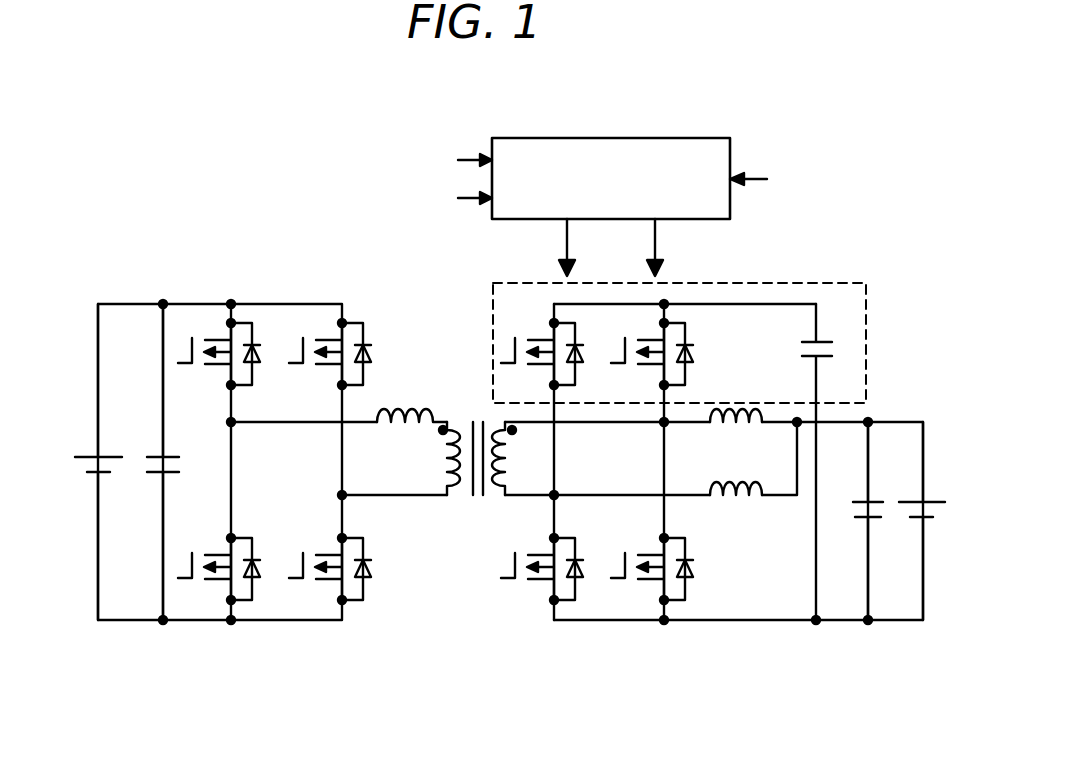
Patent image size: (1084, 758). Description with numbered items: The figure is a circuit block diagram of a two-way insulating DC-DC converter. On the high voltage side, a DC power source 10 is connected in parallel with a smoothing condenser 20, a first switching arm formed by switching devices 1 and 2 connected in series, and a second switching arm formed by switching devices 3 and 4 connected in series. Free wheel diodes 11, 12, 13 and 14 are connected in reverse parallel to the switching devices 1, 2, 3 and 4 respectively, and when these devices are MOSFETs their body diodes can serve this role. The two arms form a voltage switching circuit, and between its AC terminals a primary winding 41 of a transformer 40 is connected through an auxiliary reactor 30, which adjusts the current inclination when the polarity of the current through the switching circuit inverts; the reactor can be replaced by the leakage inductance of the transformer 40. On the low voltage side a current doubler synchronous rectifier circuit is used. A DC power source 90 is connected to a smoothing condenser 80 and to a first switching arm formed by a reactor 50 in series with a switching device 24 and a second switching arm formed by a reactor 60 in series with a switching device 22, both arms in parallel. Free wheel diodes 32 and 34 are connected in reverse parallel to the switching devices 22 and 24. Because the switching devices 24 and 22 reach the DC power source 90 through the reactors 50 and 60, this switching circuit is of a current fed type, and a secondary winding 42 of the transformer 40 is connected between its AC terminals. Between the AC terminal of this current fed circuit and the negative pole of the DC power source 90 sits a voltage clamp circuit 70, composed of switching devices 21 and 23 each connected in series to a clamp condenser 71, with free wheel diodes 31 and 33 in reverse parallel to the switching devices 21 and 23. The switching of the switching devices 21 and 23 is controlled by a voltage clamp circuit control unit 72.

The switching device 1 is at (206, 347).
The switching device 2 is at (206, 562).
The switching device 3 is at (317, 347).
The switching device 4 is at (317, 562).
The DC power source 10 is at (86, 454).
The free wheel diode 11 is at (268, 362).
The free wheel diode 12 is at (268, 577).
The free wheel diode 13 is at (378, 351).
The free wheel diode 14 is at (378, 566).
The smoothing condenser 20 is at (151, 454).
The switching device 21 is at (528, 347).
The switching device 22 is at (528, 562).
The switching device 23 is at (635, 347).
The switching device 24 is at (635, 562).
The auxiliary reactor 30 is at (403, 406).
The free wheel diode 31 is at (591, 363).
The free wheel diode 32 is at (591, 578).
The free wheel diode 33 is at (705, 351).
The free wheel diode 34 is at (704, 565).
The transformer 40 is at (467, 432).
The primary winding 41 is at (437, 455).
The secondary winding 42 is at (518, 456).
The reactor 50 is at (742, 435).
The reactor 60 is at (741, 509).
The voltage clamp circuit 70 is at (682, 435).
The clamp condenser 71 is at (823, 335).
The voltage clamp circuit control unit 72 is at (670, 136).
The smoothing condenser 80 is at (860, 500).
The DC power source 90 is at (914, 500).